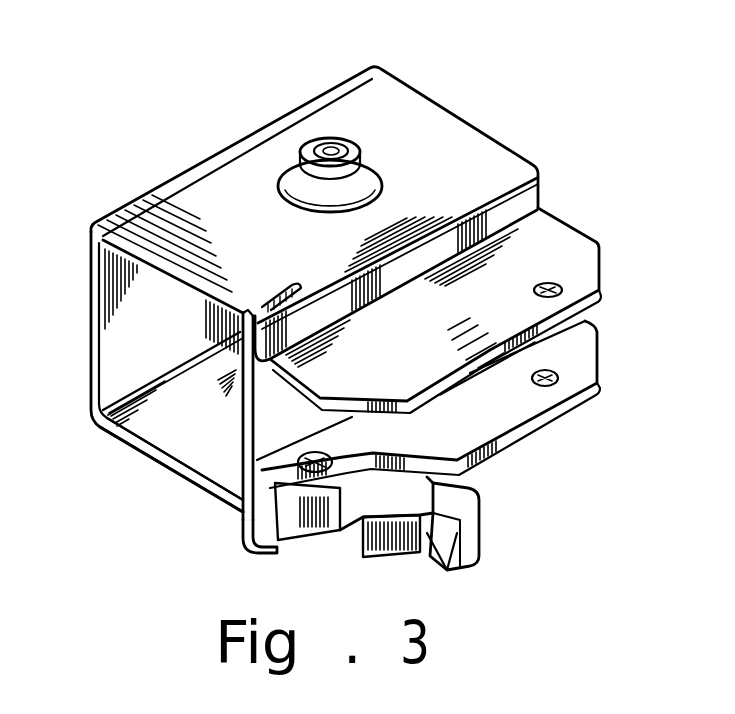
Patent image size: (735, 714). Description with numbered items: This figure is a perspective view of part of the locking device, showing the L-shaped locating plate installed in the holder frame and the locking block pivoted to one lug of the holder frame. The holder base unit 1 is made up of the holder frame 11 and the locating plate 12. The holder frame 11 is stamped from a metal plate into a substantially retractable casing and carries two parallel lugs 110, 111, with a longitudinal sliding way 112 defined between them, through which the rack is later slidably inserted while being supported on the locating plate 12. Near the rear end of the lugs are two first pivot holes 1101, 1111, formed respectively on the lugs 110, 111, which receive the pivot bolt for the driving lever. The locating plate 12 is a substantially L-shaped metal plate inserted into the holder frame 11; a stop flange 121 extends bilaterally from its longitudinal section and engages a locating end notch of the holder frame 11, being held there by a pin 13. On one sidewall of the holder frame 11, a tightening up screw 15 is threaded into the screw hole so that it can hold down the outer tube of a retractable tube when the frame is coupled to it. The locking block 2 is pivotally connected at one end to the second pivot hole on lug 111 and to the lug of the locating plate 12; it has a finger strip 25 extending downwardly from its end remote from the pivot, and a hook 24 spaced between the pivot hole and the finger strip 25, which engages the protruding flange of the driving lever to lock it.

The holder base unit 1 is at (208, 94).
The holder frame 11 is at (183, 176).
The locating plate 12 is at (240, 428).
The pin 13 is at (247, 512).
The stop flange 121 is at (268, 298).
The tightening up screw 15 is at (332, 150).
The lug 110 is at (560, 233).
The first pivot hole 1101 is at (560, 285).
The lug 111 is at (592, 352).
The first pivot hole 1111 is at (555, 385).
The longitudinal sliding way 112 is at (507, 383).
The locking block 2 is at (486, 500).
The hook 24 is at (388, 553).
The finger strip 25 is at (465, 550).